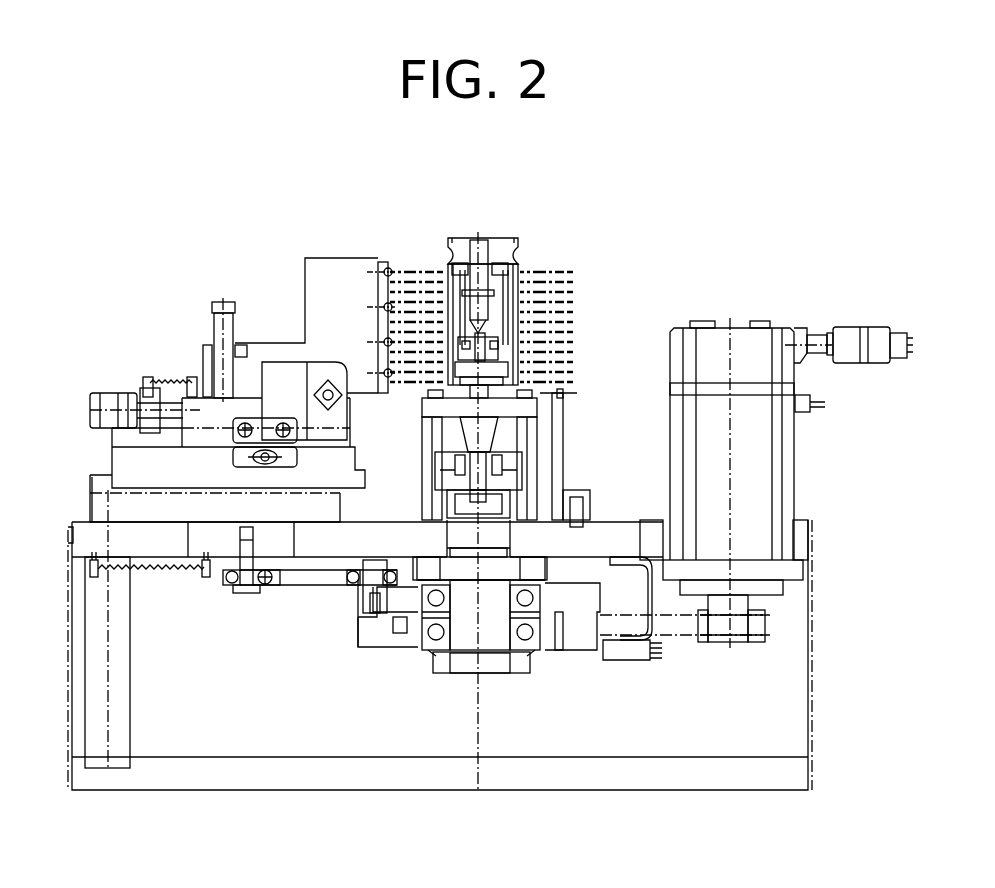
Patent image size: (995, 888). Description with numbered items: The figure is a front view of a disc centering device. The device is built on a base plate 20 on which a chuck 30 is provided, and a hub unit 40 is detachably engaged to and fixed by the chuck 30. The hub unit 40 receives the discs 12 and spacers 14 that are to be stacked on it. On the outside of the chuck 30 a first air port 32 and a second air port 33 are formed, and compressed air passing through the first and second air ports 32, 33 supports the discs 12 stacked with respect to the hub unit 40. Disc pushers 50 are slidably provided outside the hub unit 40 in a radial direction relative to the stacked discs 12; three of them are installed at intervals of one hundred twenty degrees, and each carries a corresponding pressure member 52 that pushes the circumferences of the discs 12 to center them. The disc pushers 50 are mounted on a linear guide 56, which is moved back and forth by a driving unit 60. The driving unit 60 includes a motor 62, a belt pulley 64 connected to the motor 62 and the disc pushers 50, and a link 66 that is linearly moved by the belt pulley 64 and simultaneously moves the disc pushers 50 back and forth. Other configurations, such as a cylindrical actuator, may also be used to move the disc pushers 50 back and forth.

The disc 12 is at (560, 270).
The spacer 14 is at (517, 268).
The base plate 20 is at (63, 536).
The chuck 30 is at (566, 438).
The first air port 32 is at (523, 479).
The second air port 33 is at (512, 510).
The hub unit 40 is at (450, 243).
The disc pusher 50 is at (204, 333).
The pressure member 52 is at (368, 268).
The linear guide 56 is at (88, 457).
The driving unit 60 is at (808, 330).
The motor 62 is at (786, 448).
The belt pulley 64 is at (365, 640).
The link 66 is at (288, 590).